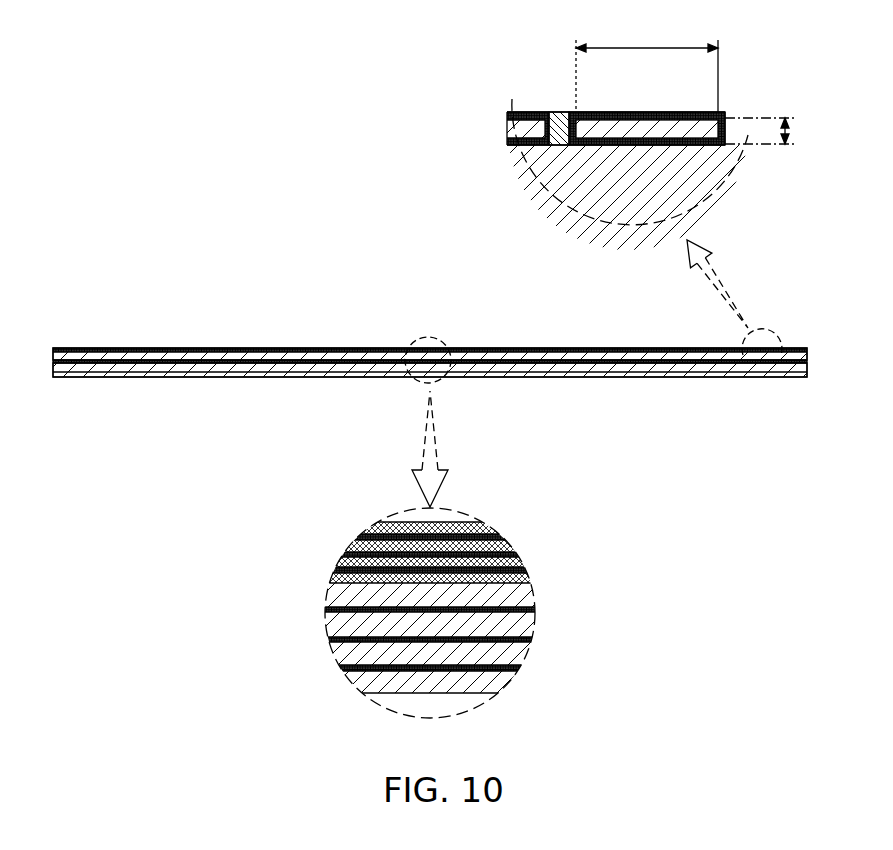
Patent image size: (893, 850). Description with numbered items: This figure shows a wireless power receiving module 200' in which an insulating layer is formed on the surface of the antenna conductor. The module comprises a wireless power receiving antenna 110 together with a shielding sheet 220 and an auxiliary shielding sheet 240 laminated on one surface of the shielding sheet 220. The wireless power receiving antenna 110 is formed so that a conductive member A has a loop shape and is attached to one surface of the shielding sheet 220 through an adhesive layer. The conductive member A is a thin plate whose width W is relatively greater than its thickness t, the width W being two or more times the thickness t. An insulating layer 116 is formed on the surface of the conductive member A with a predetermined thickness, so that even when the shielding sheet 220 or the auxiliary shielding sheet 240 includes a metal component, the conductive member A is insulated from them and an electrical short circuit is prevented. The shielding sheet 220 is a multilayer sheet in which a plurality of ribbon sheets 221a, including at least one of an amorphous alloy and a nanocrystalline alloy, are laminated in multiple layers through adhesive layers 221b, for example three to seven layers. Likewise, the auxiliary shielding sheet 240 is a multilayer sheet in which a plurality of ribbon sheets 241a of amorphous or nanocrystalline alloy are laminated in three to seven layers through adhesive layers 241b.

The wireless power receiving module 200' is at (308, 85).
The wireless power receiving antenna 110 is at (342, 347).
The shielding sheet 220 is at (719, 378).
The auxiliary shielding sheet 240 is at (799, 347).
The insulating layer 116 is at (723, 115).
The ribbon sheets 241a is at (387, 523).
The adhesive layers 241b is at (377, 533).
The ribbon sheets 221a is at (528, 595).
The adhesive layers 221b is at (535, 609).
The conductive member A is at (623, 120).
The width W is at (647, 67).
The thickness t is at (763, 131).